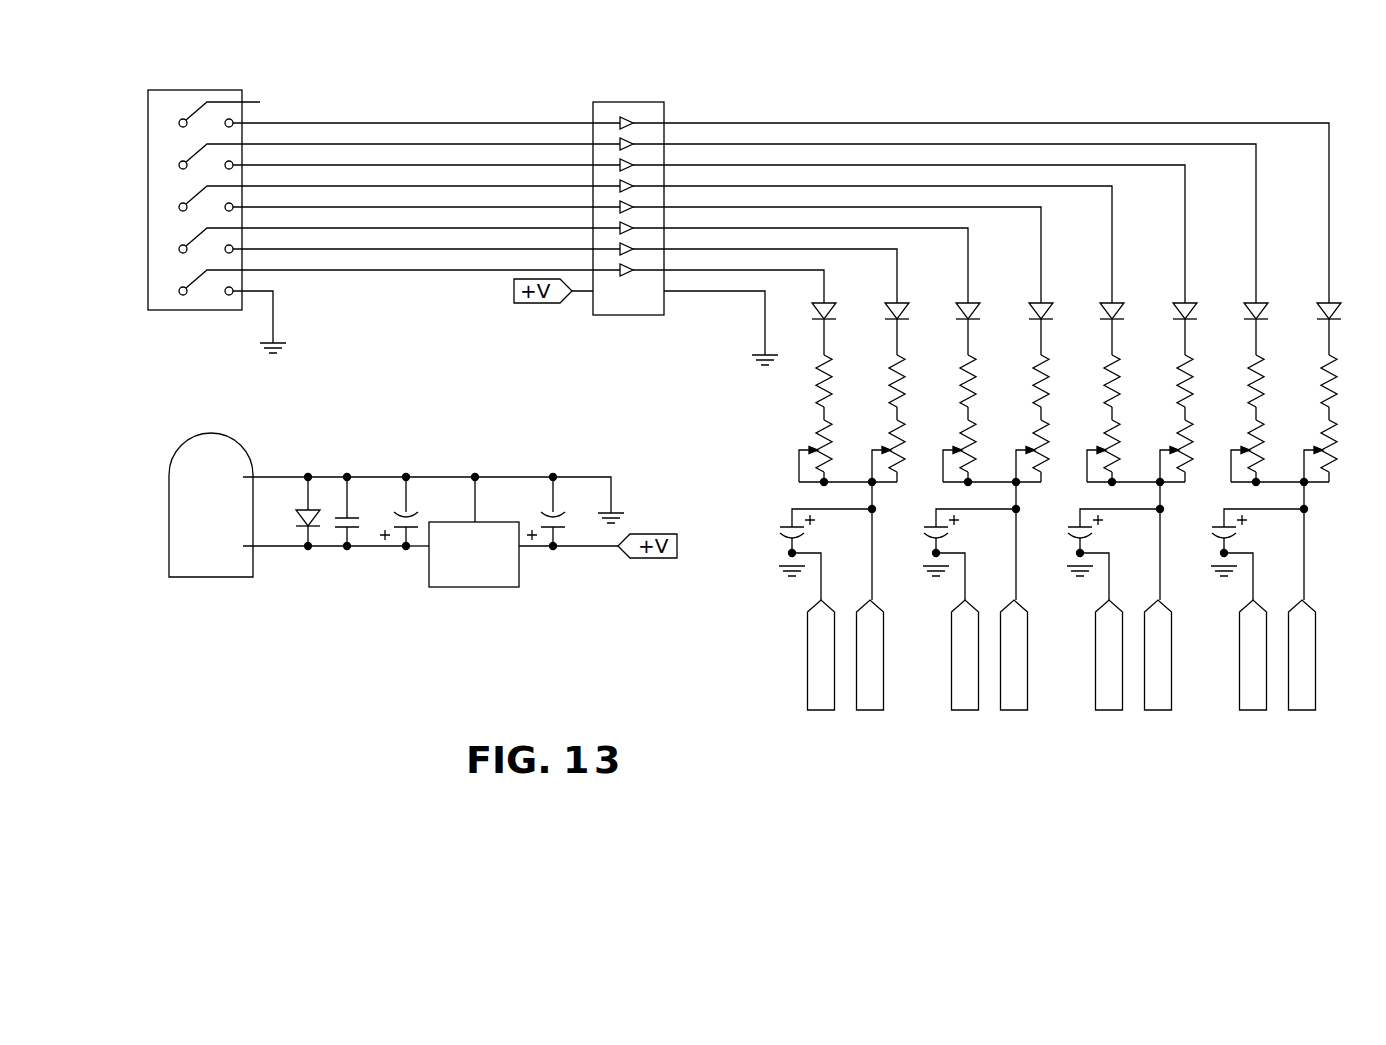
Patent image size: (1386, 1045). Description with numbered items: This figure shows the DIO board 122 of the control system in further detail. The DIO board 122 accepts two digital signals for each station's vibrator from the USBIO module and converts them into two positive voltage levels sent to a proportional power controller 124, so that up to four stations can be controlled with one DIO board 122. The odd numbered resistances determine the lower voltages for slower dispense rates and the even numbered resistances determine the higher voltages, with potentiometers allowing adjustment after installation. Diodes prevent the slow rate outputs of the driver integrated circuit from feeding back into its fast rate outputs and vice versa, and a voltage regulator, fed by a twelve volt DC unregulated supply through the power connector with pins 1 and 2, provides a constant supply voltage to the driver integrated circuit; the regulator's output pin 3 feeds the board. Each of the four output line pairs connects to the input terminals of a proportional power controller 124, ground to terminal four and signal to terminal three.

The DIO board 122 is at (1165, 84).
The proportional power controller 124 is at (1053, 707).
The power connector pin 1 (MINUS) 1 is at (275, 466).
The power connector pin 2 (PLUS) 2 is at (359, 511).
The regulator output pin 3 is at (417, 554).